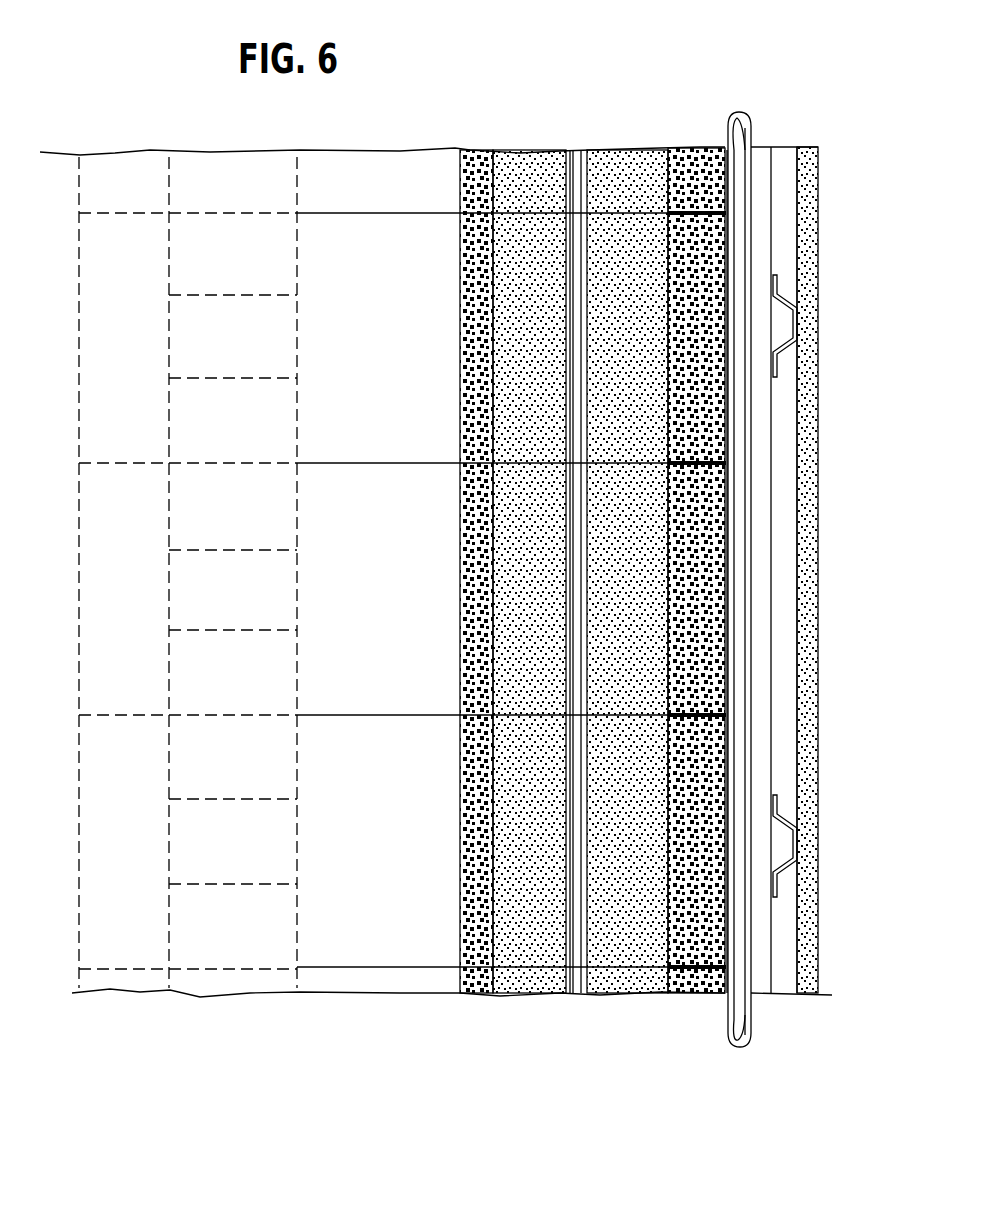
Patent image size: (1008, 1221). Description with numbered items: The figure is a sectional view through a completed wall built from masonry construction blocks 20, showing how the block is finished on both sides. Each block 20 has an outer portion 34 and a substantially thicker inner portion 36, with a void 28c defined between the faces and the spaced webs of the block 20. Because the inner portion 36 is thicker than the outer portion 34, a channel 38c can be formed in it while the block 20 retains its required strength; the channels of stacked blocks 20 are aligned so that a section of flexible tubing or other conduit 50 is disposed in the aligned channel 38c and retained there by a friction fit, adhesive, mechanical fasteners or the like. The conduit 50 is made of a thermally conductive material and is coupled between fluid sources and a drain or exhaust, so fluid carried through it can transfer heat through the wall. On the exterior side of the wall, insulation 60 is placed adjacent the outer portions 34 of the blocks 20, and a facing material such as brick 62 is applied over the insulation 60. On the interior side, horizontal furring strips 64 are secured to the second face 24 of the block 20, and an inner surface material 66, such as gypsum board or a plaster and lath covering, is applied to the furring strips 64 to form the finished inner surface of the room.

The masonry construction block 20 is at (459, 443).
The second face 24 is at (773, 923).
The void 28c is at (580, 571).
The outer portion 34 is at (475, 128).
The inner portion 36 is at (683, 122).
The channel 38c is at (765, 940).
The conduit 50 is at (745, 968).
The insulation 60 is at (379, 329).
The brick 62 is at (216, 194).
The horizontal furring strips 64 is at (778, 293).
The inner surface material 66 is at (805, 883).